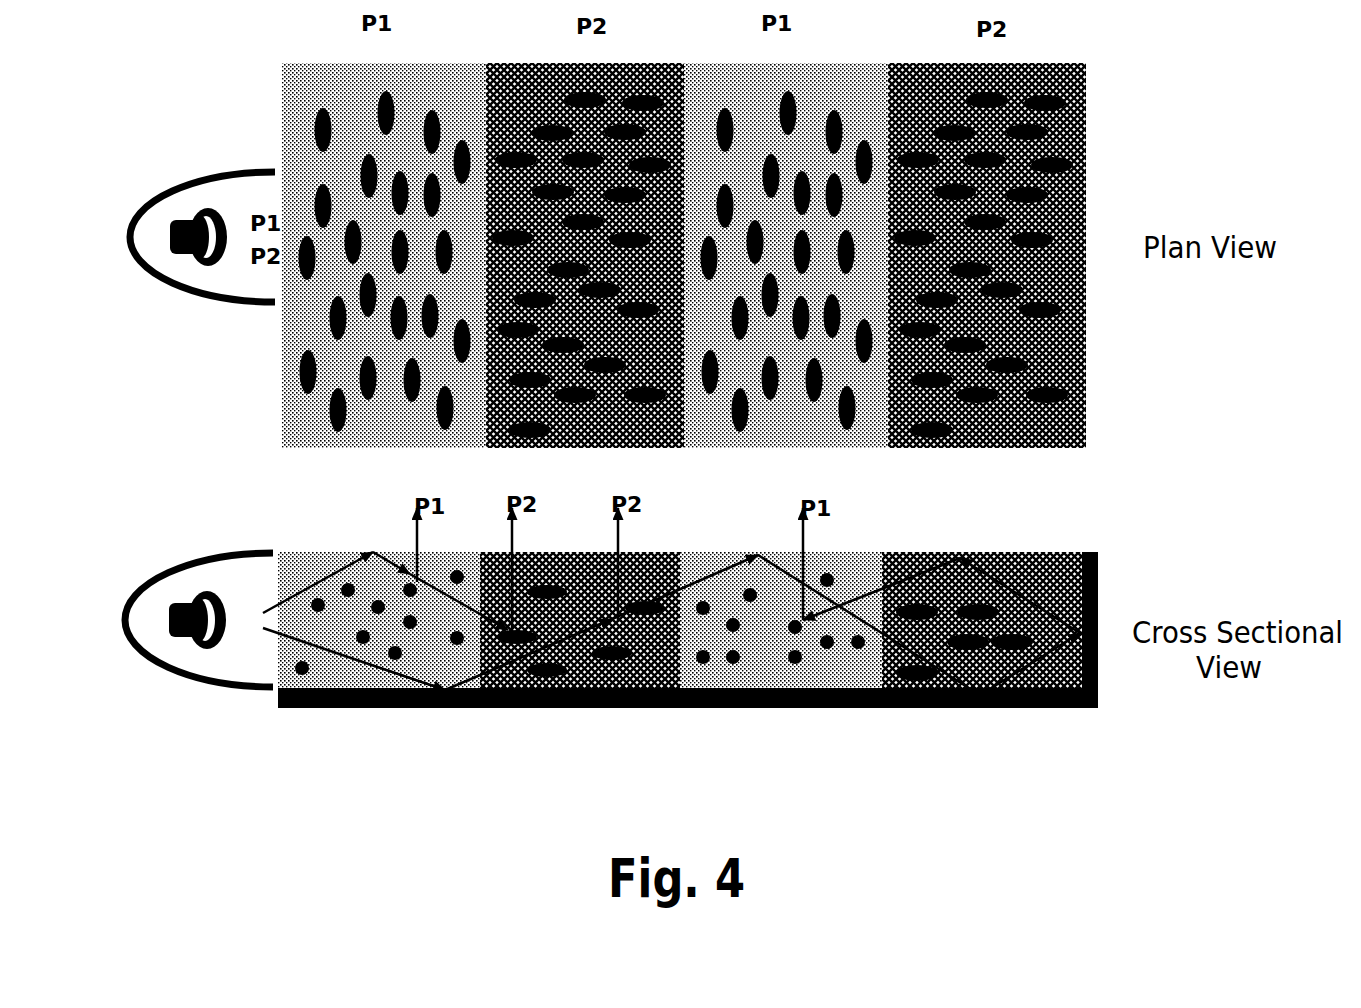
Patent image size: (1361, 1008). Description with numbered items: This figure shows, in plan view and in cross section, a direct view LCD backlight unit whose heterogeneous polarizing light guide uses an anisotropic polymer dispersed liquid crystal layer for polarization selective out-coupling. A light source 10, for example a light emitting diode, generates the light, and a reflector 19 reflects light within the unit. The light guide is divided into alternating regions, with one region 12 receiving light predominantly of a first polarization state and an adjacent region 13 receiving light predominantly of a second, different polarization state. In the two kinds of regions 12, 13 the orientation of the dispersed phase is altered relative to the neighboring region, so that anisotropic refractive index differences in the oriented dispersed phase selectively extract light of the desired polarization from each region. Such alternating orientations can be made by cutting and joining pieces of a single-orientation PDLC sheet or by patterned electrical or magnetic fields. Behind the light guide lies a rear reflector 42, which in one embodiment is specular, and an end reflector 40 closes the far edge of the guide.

The light source 10 is at (168, 612).
The region of HPLG 12 is at (583, 375).
The region of HPLG 13 is at (783, 375).
The reflector 19 is at (157, 662).
The side reflector / mirror 40 is at (1098, 672).
The rear reflector 42 is at (845, 706).